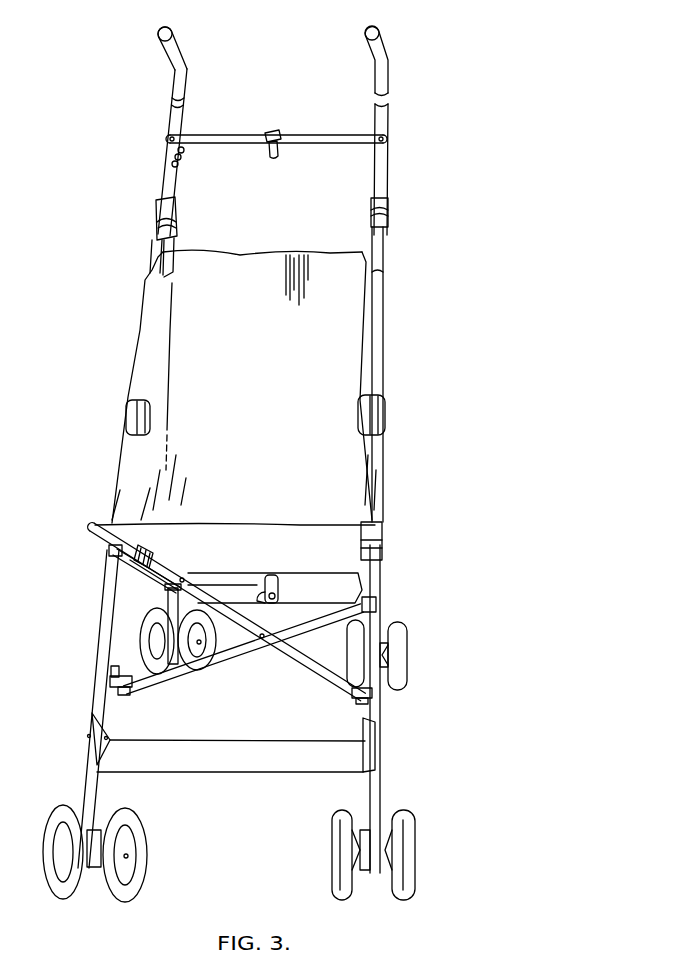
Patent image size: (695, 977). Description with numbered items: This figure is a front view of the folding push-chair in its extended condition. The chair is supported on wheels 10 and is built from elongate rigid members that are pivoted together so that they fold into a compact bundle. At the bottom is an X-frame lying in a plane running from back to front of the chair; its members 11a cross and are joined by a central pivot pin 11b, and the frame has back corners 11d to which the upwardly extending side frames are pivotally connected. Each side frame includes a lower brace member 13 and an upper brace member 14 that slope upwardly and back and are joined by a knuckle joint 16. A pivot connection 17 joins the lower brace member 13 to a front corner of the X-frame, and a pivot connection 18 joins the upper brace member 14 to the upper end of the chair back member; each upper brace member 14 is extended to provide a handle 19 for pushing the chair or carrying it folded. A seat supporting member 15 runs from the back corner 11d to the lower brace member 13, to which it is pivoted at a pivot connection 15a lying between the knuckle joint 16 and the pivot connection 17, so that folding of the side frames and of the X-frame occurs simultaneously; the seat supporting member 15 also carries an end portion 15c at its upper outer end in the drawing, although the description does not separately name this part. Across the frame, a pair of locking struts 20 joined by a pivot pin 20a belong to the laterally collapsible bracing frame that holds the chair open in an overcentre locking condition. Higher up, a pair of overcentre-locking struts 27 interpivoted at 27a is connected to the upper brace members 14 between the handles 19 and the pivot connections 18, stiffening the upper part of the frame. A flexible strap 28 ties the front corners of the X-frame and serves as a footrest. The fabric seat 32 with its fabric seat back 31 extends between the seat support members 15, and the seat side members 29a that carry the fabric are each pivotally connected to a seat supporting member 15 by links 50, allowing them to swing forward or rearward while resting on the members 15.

The wheels 10 is at (62, 812).
The members of the X-frame 11a is at (128, 696).
The central pivot pin 11b is at (262, 640).
The back corners 11d is at (168, 598).
The lower brace member 13 is at (98, 700).
The upper brace member 14 is at (152, 258).
The seat supporting member 15 is at (132, 568).
The pivot connection 15a is at (109, 550).
The side bar end 15c is at (90, 528).
The knuckle joint 16 is at (126, 416).
The pivot connection 17 is at (112, 676).
The pivot connection 18 is at (155, 209).
The handles 19 is at (183, 45).
The locking struts 20 is at (237, 592).
The pivot pin 20a is at (280, 590).
The overcentre-locking struts 27 is at (222, 135).
The pivot 27a is at (281, 134).
The flexible strap 28 is at (240, 752).
The seat side members 29a is at (152, 556).
The fabric seat back 31 is at (279, 322).
The fabric seat 32 is at (234, 526).
The links 50 is at (156, 559).